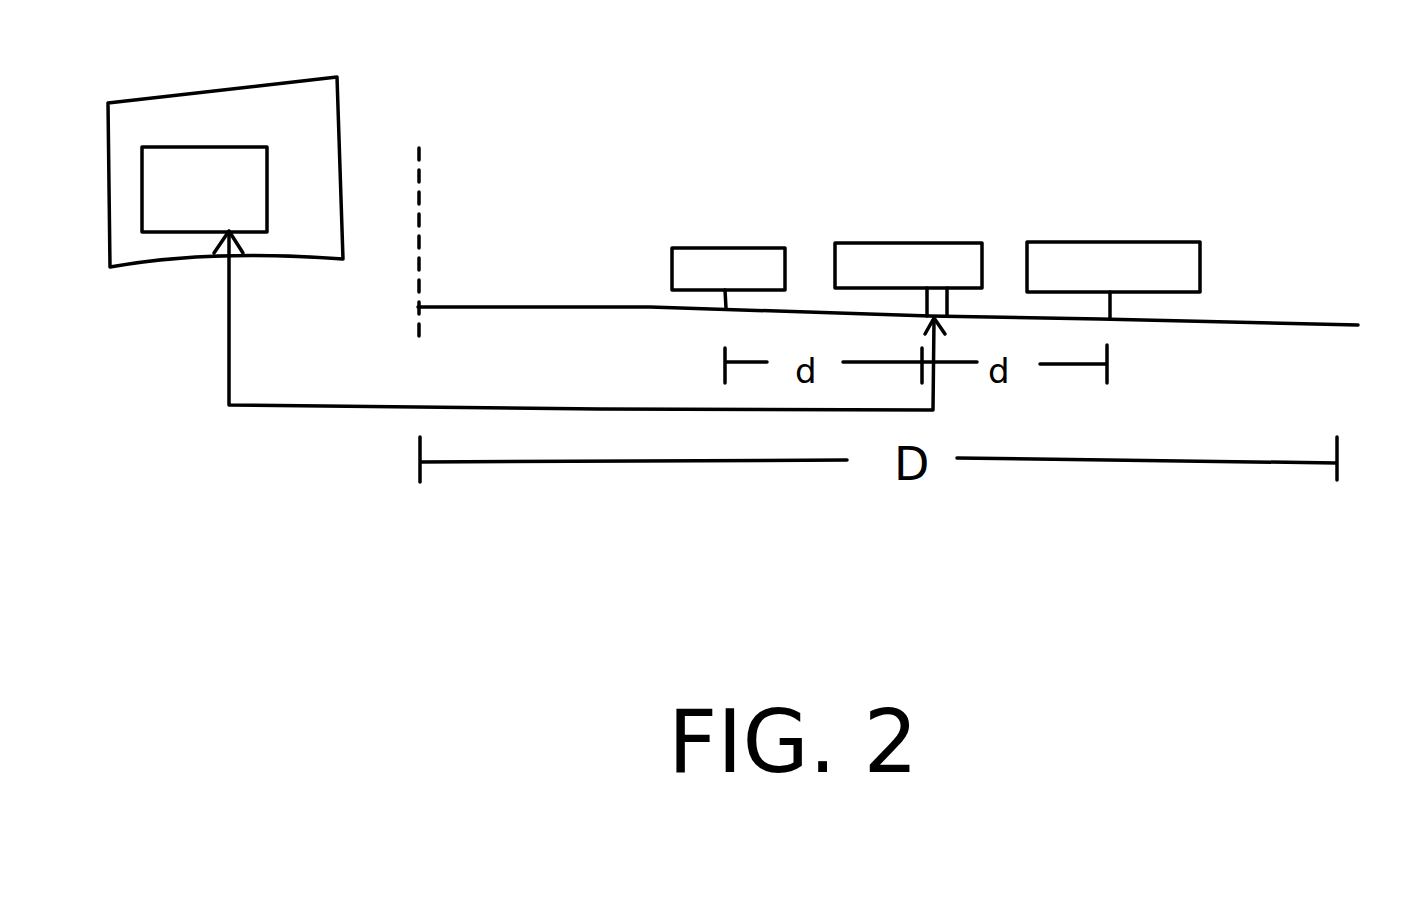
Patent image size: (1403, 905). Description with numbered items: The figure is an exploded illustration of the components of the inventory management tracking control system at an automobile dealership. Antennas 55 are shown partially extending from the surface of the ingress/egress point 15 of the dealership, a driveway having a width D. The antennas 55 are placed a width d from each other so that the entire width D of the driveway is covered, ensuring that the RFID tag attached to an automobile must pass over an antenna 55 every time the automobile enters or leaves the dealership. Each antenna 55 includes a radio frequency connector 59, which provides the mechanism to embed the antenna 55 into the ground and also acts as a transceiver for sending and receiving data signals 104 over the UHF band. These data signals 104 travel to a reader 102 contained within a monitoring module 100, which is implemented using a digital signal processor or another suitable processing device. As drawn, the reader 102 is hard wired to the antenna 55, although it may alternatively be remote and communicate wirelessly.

The ingress/egress point 15 is at (1323, 137).
The antenna 55 is at (895, 242).
The radio frequency connector 59 is at (950, 302).
The monitoring module 100 is at (332, 128).
The reader 102 is at (199, 152).
The data signals 104 is at (230, 362).